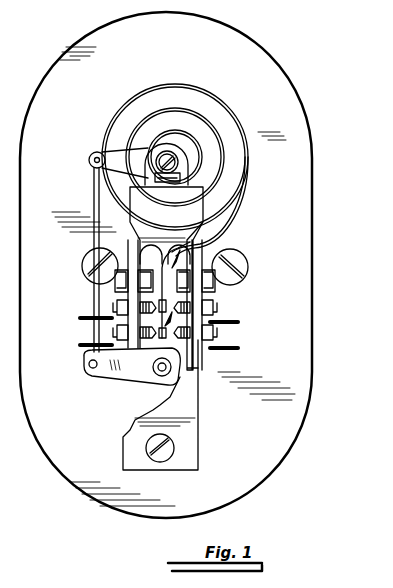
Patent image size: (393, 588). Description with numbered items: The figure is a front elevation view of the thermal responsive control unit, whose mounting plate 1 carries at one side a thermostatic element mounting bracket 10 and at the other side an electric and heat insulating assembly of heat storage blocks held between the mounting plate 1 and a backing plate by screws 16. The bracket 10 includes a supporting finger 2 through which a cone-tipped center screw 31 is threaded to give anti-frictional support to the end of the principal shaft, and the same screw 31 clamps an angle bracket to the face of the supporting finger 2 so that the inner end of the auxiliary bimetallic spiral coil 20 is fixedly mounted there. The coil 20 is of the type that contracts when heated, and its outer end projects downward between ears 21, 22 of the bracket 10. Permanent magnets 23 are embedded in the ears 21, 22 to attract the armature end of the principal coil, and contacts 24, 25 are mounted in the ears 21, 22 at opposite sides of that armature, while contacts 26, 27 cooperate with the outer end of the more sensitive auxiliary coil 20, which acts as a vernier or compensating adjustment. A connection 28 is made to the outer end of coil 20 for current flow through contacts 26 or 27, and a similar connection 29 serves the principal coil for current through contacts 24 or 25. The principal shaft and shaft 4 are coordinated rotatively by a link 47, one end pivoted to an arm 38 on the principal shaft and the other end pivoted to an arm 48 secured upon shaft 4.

The mounting plate 1 is at (247, 487).
The supporting finger 2 is at (185, 170).
The shaft 4 is at (158, 376).
The thermostatic element mounting bracket 10 is at (190, 397).
The screws 16 is at (97, 272).
The auxiliary bimetallic thermal sensitive spiral coil 20 is at (207, 97).
The ear 21 is at (115, 305).
The ear 22 is at (195, 362).
The permanent magnets 23 is at (118, 285).
The contact 24 is at (112, 340).
The contact 25 is at (218, 338).
The contact 26 is at (112, 318).
The contact 27 is at (218, 318).
The connection 28 is at (185, 260).
The connection 29 is at (170, 325).
The center screw 31 is at (178, 152).
The arm 38 is at (100, 153).
The link 47 is at (94, 200).
The arm 48 is at (110, 375).